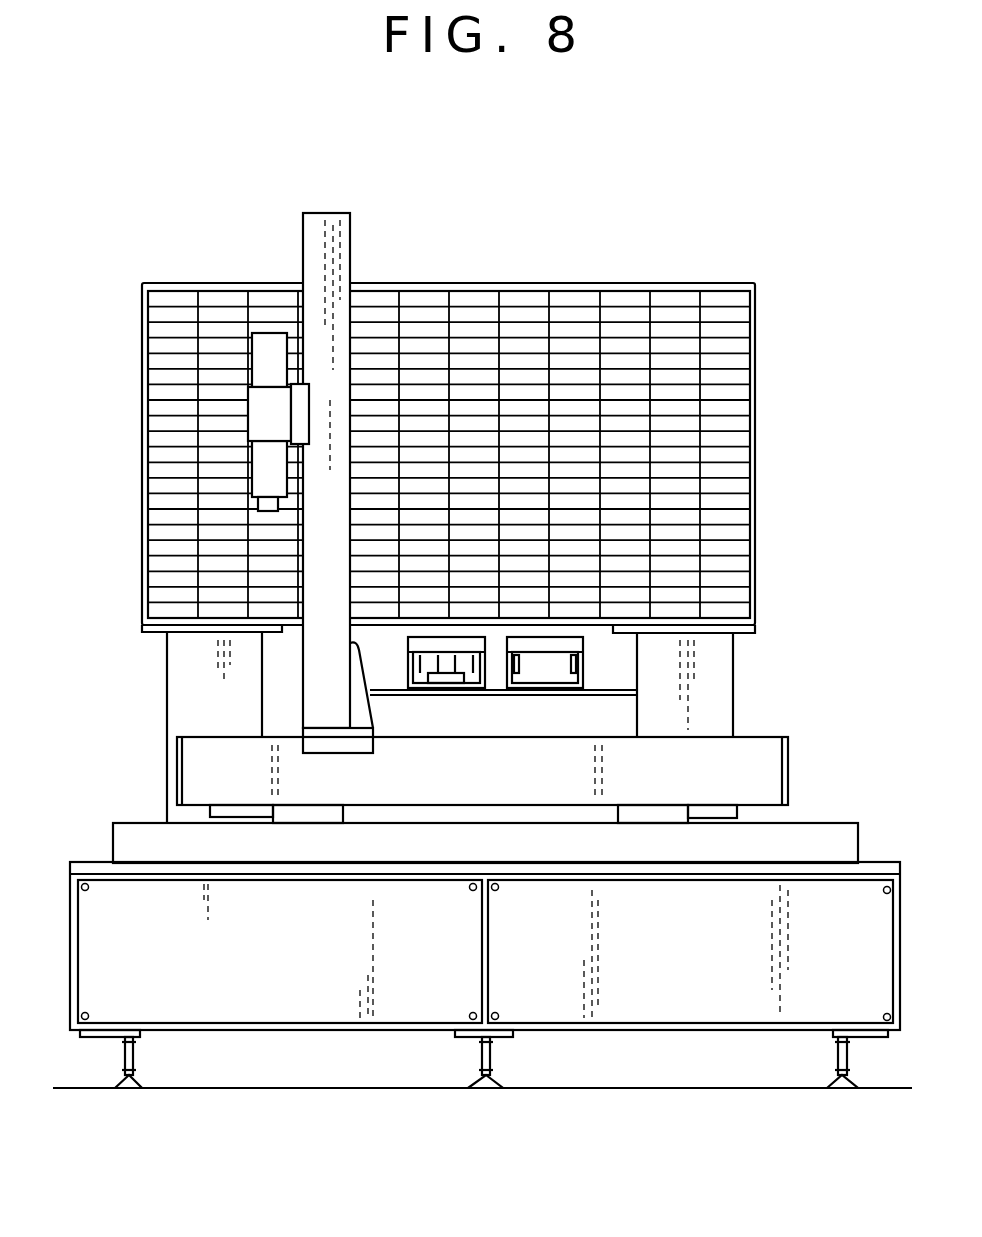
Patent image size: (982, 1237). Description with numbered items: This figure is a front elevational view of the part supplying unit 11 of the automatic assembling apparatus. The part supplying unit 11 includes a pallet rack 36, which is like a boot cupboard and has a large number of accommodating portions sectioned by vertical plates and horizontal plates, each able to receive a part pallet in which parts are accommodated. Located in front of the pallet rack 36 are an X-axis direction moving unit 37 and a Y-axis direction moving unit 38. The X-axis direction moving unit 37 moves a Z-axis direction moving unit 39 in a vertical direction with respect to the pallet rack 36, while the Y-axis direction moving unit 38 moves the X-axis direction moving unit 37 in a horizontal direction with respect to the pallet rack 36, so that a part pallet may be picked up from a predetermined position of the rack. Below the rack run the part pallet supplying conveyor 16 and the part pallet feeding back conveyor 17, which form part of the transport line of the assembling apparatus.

The part supplying unit 11 is at (556, 251).
The pallet rack 36 is at (467, 295).
The X-axis direction moving unit 37 is at (310, 252).
The Z-axis direction moving unit 39 is at (260, 404).
The part pallet feeding back conveyor 17 is at (407, 658).
The part pallet supplying conveyor 16 is at (585, 658).
The Y-axis direction moving unit 38 is at (762, 773).